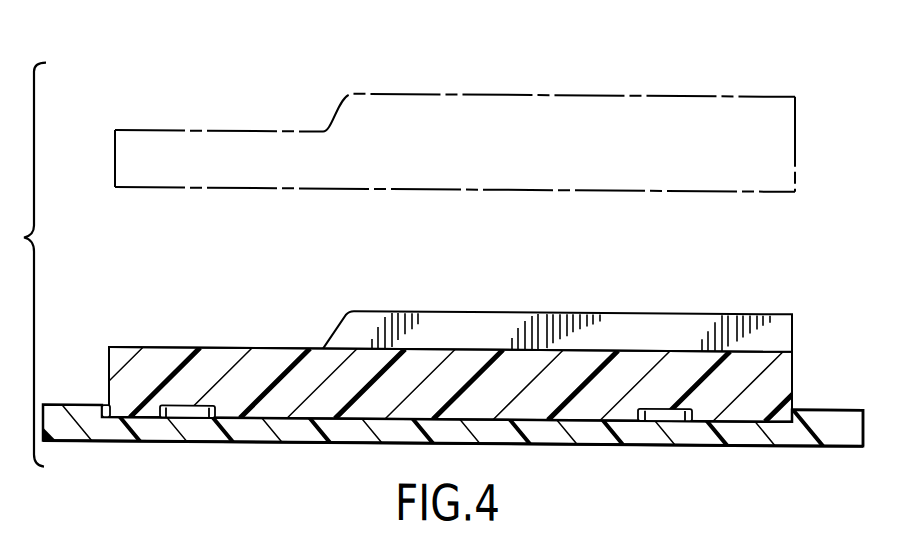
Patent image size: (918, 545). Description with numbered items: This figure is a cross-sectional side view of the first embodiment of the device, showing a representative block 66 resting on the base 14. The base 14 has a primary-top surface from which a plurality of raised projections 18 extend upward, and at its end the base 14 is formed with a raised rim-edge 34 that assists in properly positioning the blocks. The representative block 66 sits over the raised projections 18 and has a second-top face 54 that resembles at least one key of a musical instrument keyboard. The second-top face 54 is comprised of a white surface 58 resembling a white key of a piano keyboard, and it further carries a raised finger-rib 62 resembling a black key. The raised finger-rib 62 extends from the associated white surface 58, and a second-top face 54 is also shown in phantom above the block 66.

The base 14 is at (258, 427).
The raised projection 18 is at (672, 411).
The raised rim-edge 34 is at (837, 403).
The second-top face 54 is at (503, 84).
The white surface 58 is at (263, 346).
The raised finger-rib 62 is at (687, 323).
The representative block 66 is at (125, 362).